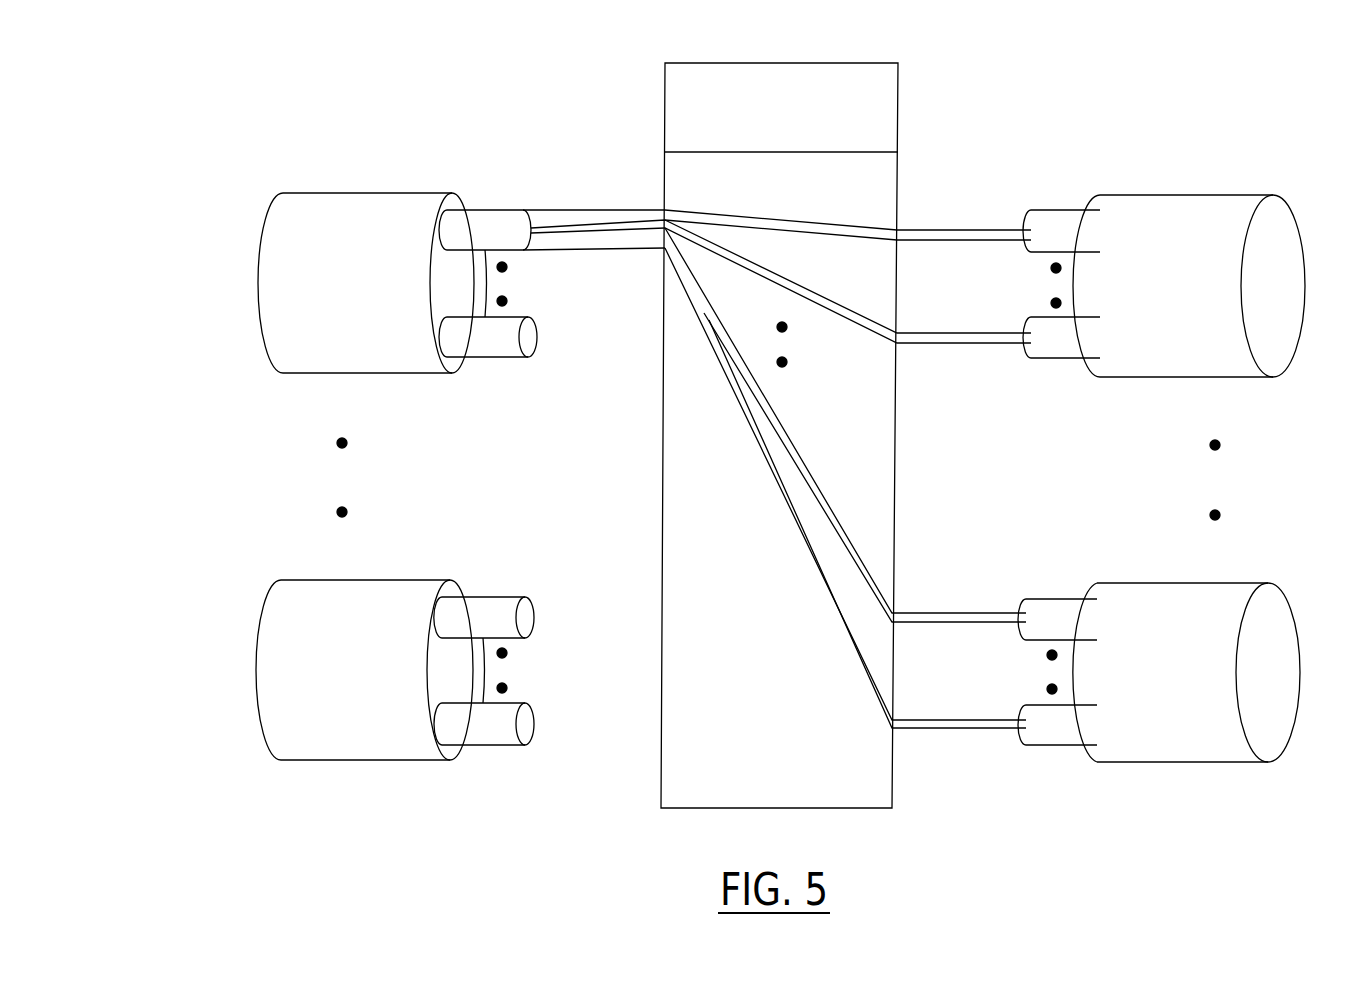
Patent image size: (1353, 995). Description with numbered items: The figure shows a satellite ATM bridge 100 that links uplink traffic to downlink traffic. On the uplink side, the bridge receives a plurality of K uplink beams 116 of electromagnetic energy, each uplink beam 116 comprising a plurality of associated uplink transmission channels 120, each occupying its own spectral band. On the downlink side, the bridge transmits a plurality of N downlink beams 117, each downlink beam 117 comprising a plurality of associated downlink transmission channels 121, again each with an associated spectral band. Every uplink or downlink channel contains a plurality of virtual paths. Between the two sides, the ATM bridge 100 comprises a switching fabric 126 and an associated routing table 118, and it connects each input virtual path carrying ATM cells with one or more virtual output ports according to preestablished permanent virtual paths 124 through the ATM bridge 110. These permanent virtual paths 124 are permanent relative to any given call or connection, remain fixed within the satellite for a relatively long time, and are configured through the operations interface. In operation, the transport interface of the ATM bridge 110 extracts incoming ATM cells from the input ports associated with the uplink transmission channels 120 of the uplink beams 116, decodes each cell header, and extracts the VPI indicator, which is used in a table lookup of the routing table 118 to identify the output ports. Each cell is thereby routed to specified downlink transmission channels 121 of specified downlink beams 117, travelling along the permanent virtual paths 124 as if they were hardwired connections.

The satellite ATM bridge 100 is at (288, 69).
The ATM bridge 110 is at (956, 56).
The uplink beam 116 is at (318, 373).
The downlink beam 117 is at (1193, 377).
The routing table 118 is at (898, 92).
The uplink transmission channel 120 is at (510, 208).
The downlink transmission channel 121 is at (1034, 210).
The permanent virtual path 124 is at (915, 241).
The switching fabric 126 is at (773, 808).